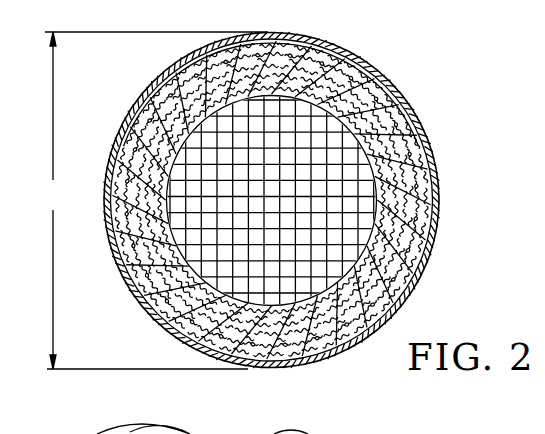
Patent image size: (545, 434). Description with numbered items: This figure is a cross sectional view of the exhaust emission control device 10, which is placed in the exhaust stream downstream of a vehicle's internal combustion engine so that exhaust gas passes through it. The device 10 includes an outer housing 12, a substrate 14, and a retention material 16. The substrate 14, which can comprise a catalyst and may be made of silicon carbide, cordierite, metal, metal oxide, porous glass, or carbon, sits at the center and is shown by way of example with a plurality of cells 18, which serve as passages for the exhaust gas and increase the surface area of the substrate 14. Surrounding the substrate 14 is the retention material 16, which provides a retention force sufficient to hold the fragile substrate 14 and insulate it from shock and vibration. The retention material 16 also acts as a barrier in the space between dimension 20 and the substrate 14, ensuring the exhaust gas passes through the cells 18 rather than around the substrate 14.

The exhaust emission control device 10 is at (308, 190).
The outer housing 12 is at (404, 110).
The substrate 14 is at (404, 293).
The retention material 16 is at (398, 167).
The cells 18 is at (352, 187).
The dimension 20 is at (155, 200).